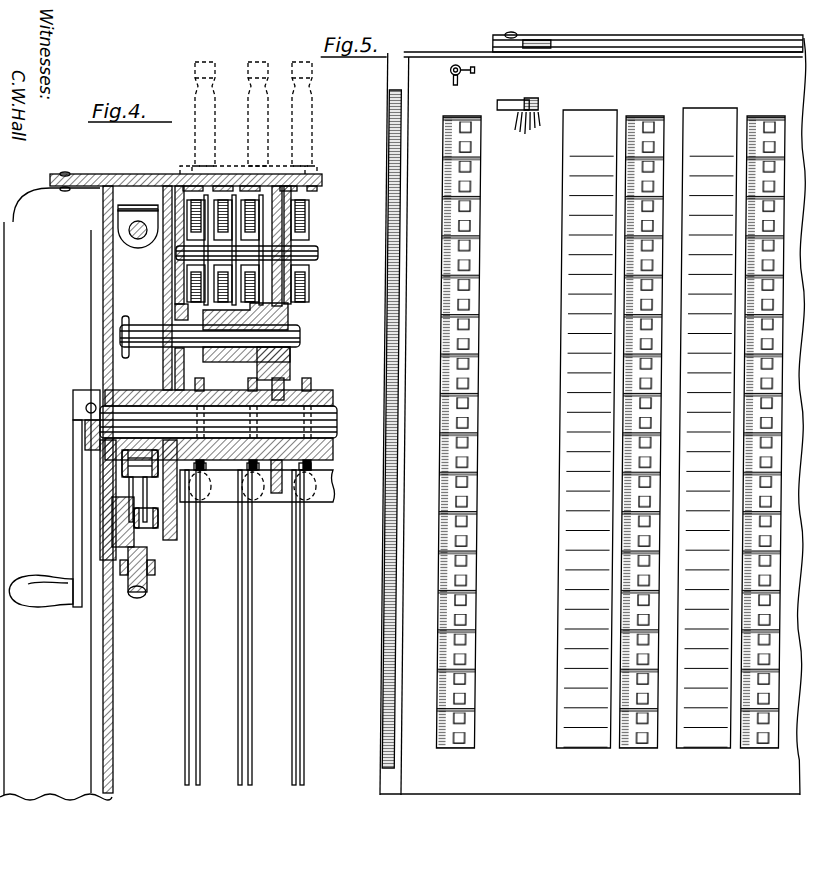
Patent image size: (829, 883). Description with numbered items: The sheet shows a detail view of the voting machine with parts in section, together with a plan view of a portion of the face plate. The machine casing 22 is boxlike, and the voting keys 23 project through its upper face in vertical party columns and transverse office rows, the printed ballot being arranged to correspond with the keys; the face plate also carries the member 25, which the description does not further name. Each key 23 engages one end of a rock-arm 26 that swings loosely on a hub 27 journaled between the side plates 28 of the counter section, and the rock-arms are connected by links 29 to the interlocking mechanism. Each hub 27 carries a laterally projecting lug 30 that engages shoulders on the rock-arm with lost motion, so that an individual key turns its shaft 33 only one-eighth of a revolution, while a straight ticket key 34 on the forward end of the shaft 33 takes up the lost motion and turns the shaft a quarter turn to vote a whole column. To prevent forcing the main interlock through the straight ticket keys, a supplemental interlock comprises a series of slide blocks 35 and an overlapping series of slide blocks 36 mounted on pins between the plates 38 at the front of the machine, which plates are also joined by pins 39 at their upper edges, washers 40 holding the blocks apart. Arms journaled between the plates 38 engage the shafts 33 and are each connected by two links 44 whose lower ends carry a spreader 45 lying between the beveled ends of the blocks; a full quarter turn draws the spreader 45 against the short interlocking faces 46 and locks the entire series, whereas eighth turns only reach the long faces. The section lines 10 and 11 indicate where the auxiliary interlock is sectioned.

In FIG. 4, the section line 10— 10 is at (92, 160).
In FIG. 4, the section line 11— 11 is at (118, 187).
In FIG. 4, the machine casing 22 is at (105, 758).
In FIG. 5, the machine casing 22 is at (594, 413).
In FIG. 4, the voting keys 23 is at (300, 80).
In FIG. 5, the voting keys 23 is at (776, 133).
In FIG. 4, the keys 25 is at (330, 497).
In FIG. 5, the keys 25 is at (656, 285).
In FIG. 4, the rock-arm 26 is at (222, 378).
In FIG. 4, the hub 27 is at (328, 396).
In FIG. 4, the side plates 28 is at (280, 465).
In FIG. 4, the links 29 is at (190, 722).
In FIG. 4, the lug 30 is at (328, 452).
In FIG. 4, the shafts 33 is at (322, 420).
In FIG. 4, the straight ticket keys 34 is at (80, 473).
In FIG. 4, the slide blocks 35 is at (140, 596).
In FIG. 4, the slide blocks 36 is at (133, 597).
In FIG. 4, the plates 38 is at (170, 278).
In FIG. 4, the pins 39 is at (125, 212).
In FIG. 4, the washers 40 is at (140, 546).
In FIG. 4, the links 44 is at (128, 548).
In FIG. 4, the spreader 45 is at (133, 485).
In FIG. 4, the short interlocking faces 46 is at (135, 600).